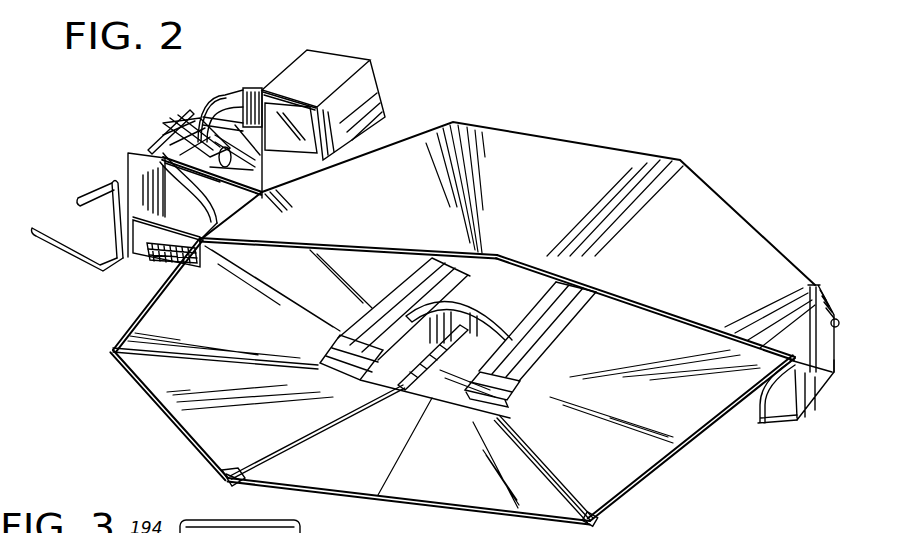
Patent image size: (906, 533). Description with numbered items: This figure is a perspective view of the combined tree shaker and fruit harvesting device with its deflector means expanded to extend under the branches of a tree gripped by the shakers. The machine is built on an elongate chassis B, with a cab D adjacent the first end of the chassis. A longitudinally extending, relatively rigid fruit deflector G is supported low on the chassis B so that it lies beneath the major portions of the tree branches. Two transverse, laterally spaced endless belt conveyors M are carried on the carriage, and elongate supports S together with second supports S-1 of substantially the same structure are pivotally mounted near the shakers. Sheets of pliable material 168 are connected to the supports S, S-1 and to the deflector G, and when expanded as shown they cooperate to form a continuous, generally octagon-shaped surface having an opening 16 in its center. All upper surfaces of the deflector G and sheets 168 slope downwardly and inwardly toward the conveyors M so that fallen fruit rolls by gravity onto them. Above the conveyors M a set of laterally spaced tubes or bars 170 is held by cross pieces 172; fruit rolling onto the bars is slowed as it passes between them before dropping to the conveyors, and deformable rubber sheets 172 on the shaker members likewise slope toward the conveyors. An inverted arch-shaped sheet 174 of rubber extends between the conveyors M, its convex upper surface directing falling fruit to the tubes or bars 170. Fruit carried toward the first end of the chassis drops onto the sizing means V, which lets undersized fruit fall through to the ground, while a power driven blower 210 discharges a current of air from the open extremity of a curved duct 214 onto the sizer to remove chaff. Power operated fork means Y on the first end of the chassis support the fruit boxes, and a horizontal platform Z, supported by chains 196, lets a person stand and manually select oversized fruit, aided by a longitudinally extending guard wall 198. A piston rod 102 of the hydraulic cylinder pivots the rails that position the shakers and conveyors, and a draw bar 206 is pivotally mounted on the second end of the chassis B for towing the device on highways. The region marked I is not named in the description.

The curved duct 214 is at (224, 96).
The power driven blower 210 is at (262, 87).
The piston rod 102 is at (128, 155).
The chains 196 is at (157, 222).
The guard wall 198 is at (210, 220).
The cross pieces 172 is at (403, 347).
The inverted arch-shaped sheet 174 is at (502, 260).
The tubes or bars 170 is at (560, 332).
The opening 16 is at (543, 349).
The sheets of pliable material 168 is at (608, 444).
The draw bar 206 is at (812, 337).
The sizing means V is at (203, 100).
The cab D is at (350, 58).
The power operated fork means Y is at (50, 240).
The horizontal platform Z is at (136, 262).
The intermediate panel I is at (642, 407).
The fruit deflector G is at (535, 204).
The endless belt conveyors M is at (340, 363).
The elongate supports S is at (273, 462).
The second supports S-1 is at (598, 521).
The chassis B is at (773, 420).